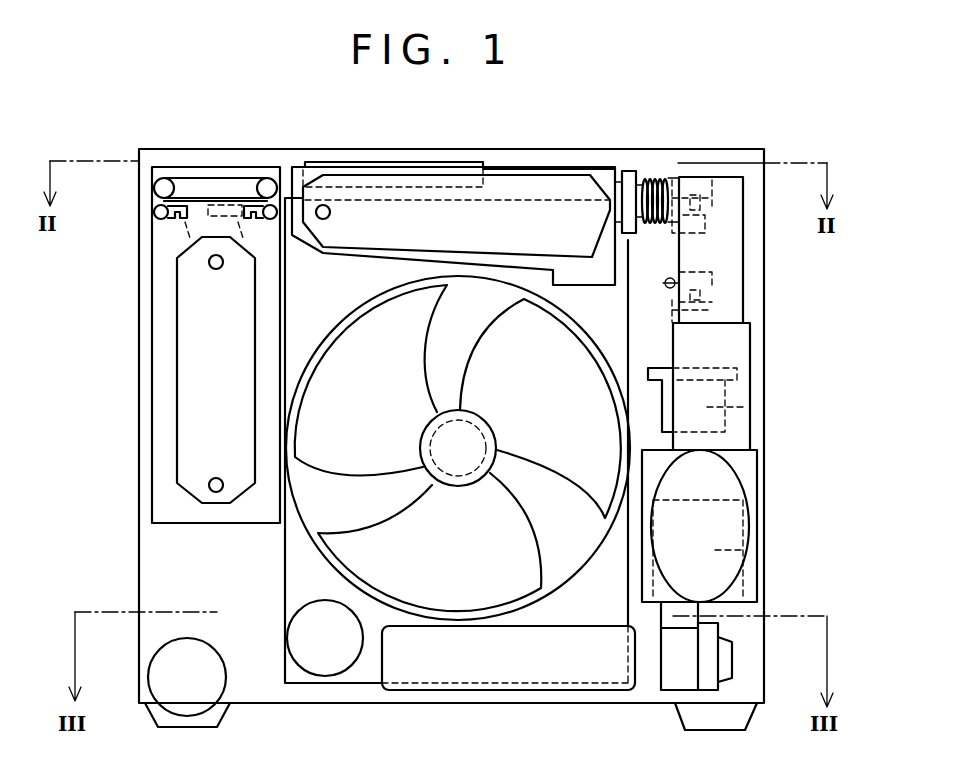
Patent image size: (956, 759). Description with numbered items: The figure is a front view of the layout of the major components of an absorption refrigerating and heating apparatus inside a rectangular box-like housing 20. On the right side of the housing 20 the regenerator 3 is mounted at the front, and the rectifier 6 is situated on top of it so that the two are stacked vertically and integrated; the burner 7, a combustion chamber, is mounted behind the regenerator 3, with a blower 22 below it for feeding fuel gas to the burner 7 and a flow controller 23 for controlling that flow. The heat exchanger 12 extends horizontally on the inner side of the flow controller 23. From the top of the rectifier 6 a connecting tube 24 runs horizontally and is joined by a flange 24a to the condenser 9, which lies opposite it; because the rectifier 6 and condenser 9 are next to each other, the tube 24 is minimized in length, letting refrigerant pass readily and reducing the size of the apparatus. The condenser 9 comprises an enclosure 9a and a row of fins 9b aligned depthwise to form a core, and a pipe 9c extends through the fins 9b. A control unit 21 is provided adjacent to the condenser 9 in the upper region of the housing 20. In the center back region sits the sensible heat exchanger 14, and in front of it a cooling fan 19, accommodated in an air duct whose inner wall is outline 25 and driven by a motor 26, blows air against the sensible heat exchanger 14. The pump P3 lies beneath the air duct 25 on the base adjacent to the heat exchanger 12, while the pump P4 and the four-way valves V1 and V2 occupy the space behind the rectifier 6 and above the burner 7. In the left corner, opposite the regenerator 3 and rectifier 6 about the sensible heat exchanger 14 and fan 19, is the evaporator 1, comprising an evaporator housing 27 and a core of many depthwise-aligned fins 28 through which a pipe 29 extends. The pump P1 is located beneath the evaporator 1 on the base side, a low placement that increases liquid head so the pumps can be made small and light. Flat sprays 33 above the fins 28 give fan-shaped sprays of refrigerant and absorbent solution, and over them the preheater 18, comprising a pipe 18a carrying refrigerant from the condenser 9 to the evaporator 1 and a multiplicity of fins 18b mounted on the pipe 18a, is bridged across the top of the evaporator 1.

The evaporator 1 is at (182, 375).
The regenerator 3 is at (713, 475).
The rectifier 6 is at (733, 352).
The burner 7 is at (740, 552).
The condenser 9 is at (571, 151).
The enclosure 9a is at (517, 170).
The fins 9b is at (508, 226).
The pipe 9c is at (331, 213).
The heat exchanger 12 is at (527, 675).
The sensible heat exchanger 14 is at (334, 303).
The preheater 18 is at (193, 154).
The pipe 18a is at (154, 189).
The fins 18b is at (197, 180).
The cooling fan 19 is at (520, 577).
The housing 20 is at (138, 545).
The control unit 21 is at (312, 161).
The blower 22 is at (732, 653).
The flow controller 23 is at (663, 676).
The connecting tube 24 is at (661, 179).
The flange 24a is at (630, 170).
The air duct 25 is at (302, 512).
The motor 26 is at (453, 421).
The evaporator housing 27 is at (152, 390).
The fins 28 is at (190, 328).
The pipe 29 is at (209, 485).
The flat sprays 33 is at (242, 207).
The pump P1 is at (197, 687).
The pump P3 is at (322, 658).
The pump P4 is at (748, 405).
The four-way valve V1 is at (710, 190).
The four-way valve V2 is at (712, 272).